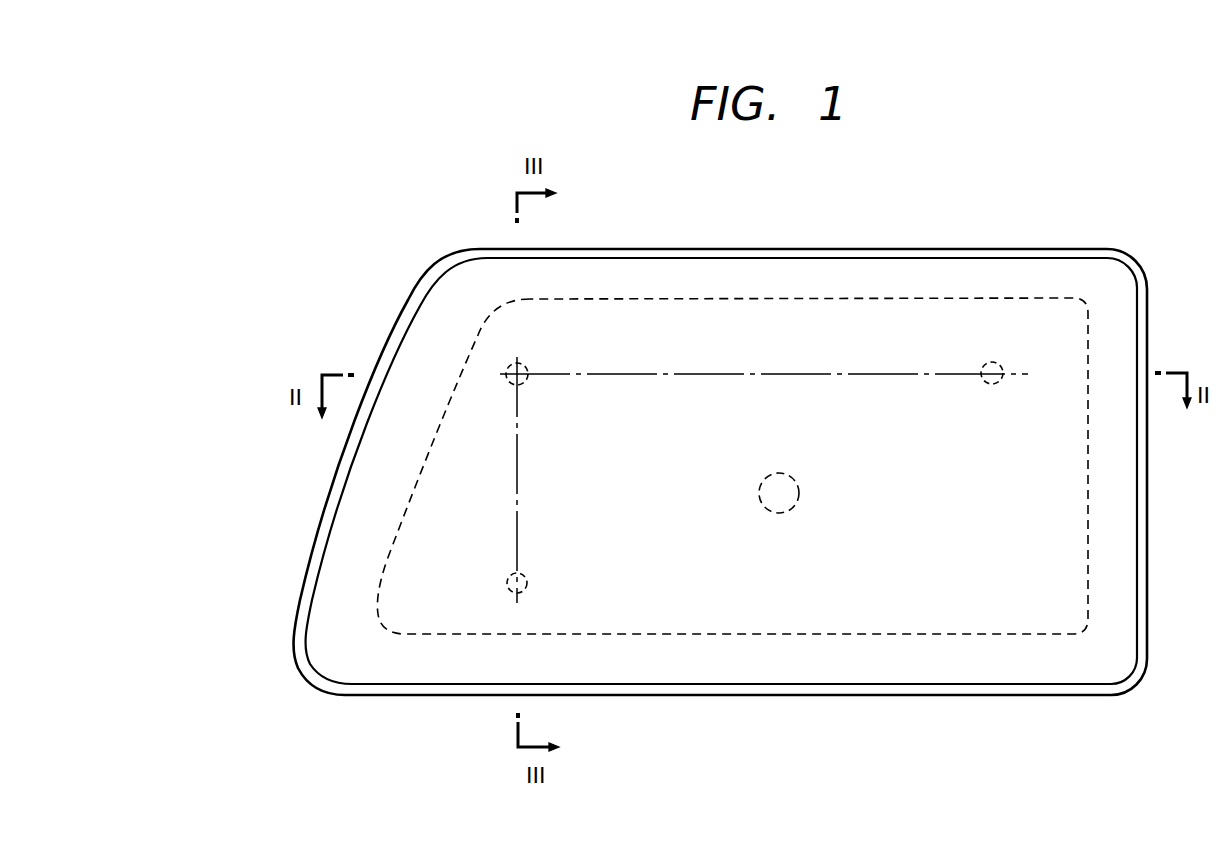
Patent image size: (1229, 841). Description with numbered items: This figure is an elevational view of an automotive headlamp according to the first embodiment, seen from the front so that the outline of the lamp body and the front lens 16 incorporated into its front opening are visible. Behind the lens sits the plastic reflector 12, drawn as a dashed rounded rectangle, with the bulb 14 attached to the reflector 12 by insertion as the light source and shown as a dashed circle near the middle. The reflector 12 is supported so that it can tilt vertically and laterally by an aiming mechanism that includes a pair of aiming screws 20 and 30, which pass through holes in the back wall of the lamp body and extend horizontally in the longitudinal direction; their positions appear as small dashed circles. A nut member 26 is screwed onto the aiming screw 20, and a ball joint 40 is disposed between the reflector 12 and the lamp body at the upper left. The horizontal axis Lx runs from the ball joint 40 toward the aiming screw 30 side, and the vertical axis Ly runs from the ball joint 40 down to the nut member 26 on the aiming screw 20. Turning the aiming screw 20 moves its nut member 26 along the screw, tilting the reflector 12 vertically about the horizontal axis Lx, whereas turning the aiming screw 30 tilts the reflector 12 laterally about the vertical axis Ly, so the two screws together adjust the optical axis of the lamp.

The reflector 12 is at (778, 290).
The bulb 14 is at (774, 513).
The front lens 16 is at (915, 600).
The aiming screw 20 is at (421, 661).
The nut member 26 is at (496, 589).
The aiming screw 30 is at (1001, 352).
The ball joint 40 is at (504, 360).
The horizontal axis Lx is at (888, 372).
The vertical axis Ly is at (516, 548).